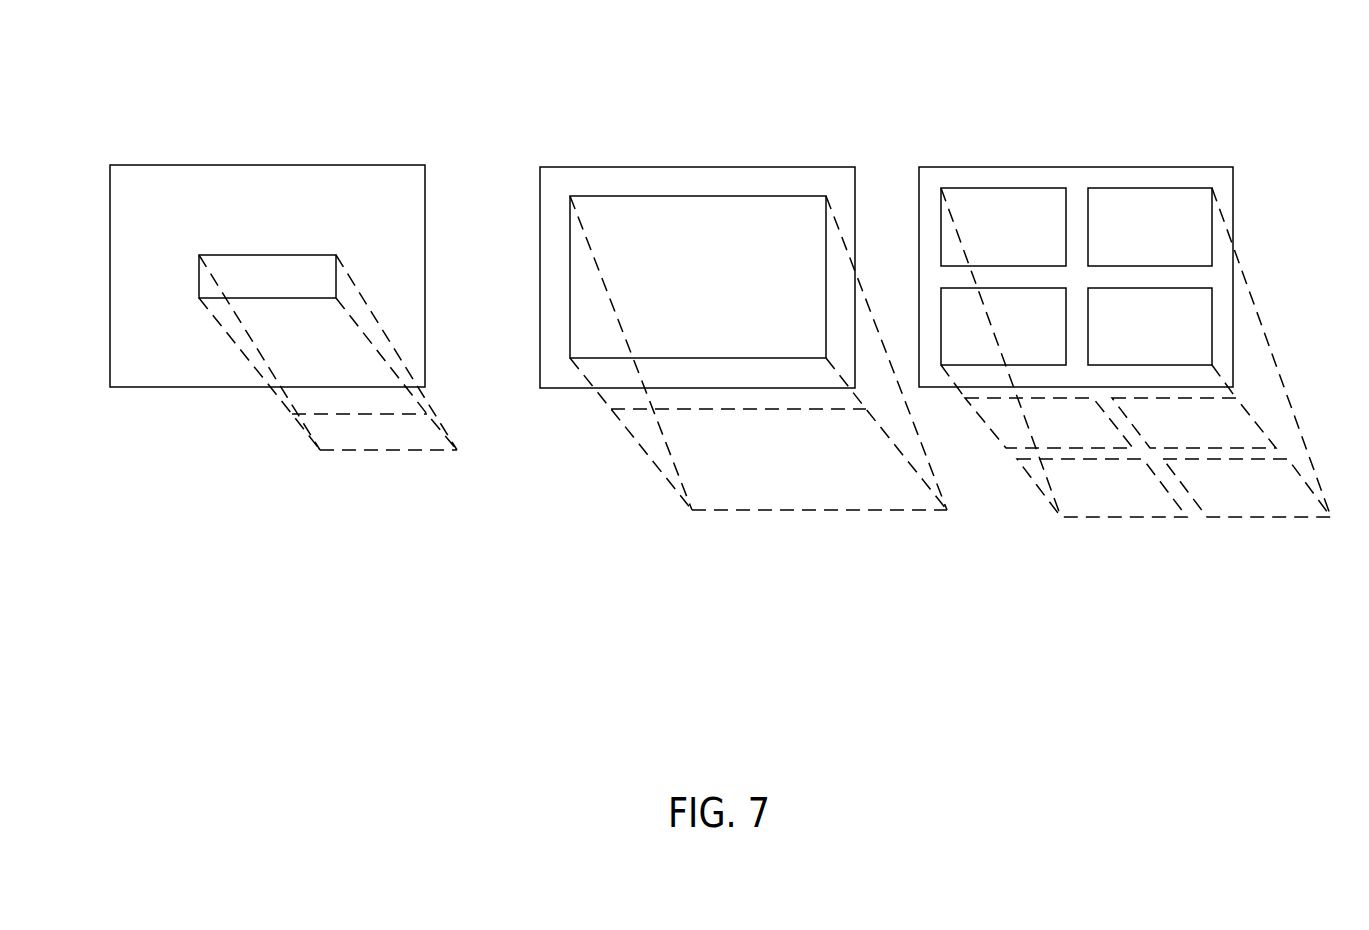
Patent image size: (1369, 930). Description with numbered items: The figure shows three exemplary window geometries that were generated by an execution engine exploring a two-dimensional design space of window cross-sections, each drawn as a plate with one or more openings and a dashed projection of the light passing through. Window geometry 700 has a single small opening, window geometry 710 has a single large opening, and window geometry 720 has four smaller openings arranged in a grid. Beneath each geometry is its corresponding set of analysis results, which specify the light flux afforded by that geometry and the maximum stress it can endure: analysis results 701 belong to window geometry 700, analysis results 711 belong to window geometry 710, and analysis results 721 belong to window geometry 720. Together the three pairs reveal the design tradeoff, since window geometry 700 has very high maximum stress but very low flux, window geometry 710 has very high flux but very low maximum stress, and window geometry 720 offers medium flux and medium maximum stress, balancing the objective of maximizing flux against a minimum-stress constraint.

The window geometry 700 is at (247, 123).
The analysis results 701 is at (197, 583).
The window geometry 710 is at (687, 123).
The analysis results 711 is at (687, 583).
The window geometry 720 is at (1067, 123).
The analysis results 721 is at (1123, 583).